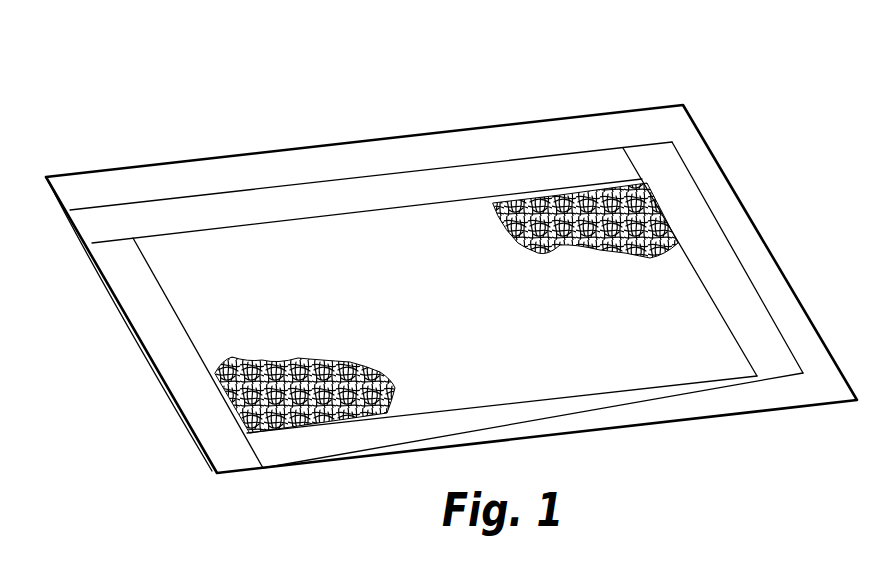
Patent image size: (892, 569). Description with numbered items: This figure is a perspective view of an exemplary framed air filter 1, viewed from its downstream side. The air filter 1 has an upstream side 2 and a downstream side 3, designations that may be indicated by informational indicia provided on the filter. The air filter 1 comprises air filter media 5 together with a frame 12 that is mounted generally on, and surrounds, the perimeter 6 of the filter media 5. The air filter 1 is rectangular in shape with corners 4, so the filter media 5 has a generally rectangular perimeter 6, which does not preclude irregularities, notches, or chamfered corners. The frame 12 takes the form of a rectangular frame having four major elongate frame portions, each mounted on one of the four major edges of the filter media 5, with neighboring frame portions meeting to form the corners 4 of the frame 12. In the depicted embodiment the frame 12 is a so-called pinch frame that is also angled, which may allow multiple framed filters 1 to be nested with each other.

The framed air filter 1 is at (233, 75).
The upstream side 2 is at (703, 440).
The downstream side 3 is at (765, 130).
The corners 4 is at (46, 177).
The air filter media 5 is at (563, 193).
The perimeter 6 is at (725, 297).
The frame 12 is at (135, 333).